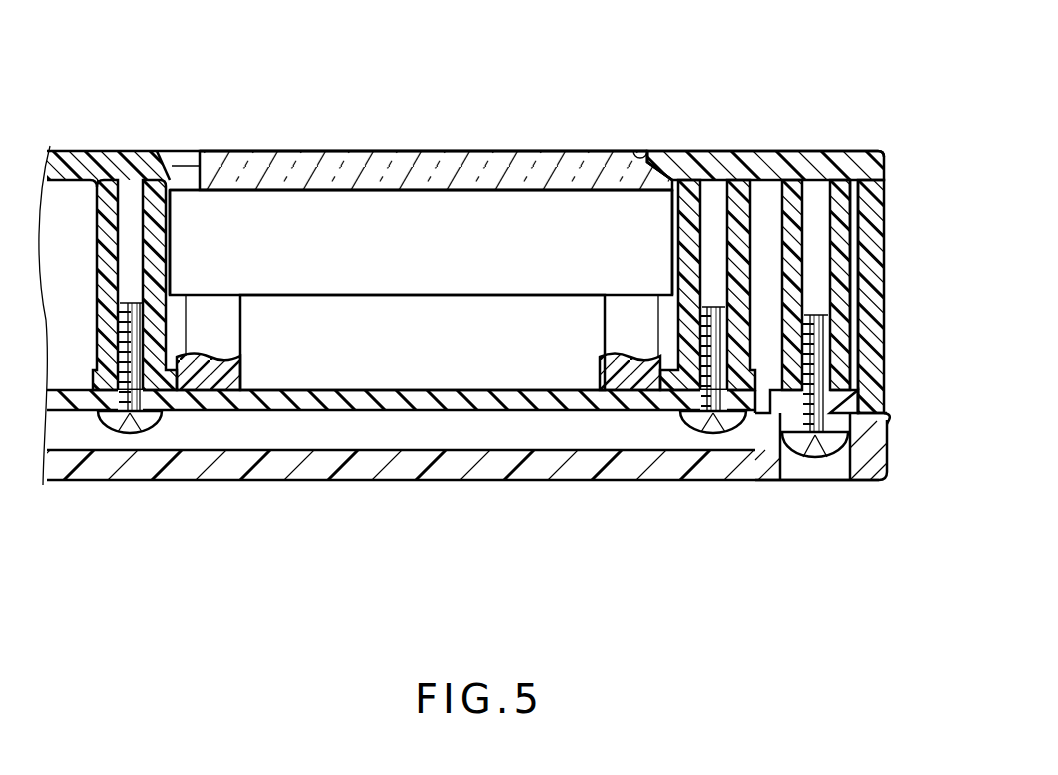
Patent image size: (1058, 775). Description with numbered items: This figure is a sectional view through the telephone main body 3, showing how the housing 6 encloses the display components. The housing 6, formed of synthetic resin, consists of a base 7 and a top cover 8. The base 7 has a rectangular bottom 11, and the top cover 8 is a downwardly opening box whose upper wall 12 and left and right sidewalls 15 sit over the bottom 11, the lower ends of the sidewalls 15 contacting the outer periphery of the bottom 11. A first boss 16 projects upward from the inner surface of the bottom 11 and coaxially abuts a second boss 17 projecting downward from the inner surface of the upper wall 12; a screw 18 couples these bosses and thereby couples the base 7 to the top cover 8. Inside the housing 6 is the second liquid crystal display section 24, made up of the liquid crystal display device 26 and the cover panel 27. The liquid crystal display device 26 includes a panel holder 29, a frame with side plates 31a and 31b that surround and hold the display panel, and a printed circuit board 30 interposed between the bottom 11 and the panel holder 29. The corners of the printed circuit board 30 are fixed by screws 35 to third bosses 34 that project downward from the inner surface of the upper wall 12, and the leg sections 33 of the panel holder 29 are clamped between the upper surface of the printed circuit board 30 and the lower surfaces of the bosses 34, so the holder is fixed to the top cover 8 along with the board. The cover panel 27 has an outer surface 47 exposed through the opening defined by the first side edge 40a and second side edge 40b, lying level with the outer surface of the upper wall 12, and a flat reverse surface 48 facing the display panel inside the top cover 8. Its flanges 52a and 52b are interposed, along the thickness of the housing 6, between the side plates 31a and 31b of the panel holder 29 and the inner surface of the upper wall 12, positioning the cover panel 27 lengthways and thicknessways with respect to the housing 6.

The telephone main body 3 is at (791, 78).
The flange 52b is at (178, 151).
The second side edge 40b is at (198, 162).
The surface 47 is at (300, 178).
The cover panel 27 is at (368, 166).
The liquid crystal display device 26 is at (478, 215).
The second liquid crystal display section 24 is at (596, 170).
The first side edge 40a is at (640, 156).
The flange 52a is at (688, 152).
The upper wall 12 is at (808, 151).
The third boss 34 is at (103, 247).
The side plate 31b is at (172, 266).
The reverse surface 48 is at (311, 194).
The side plate 31a is at (672, 262).
The second boss 17 is at (862, 233).
The sidewall 15 is at (882, 270).
The panel holder 29 is at (392, 270).
The screw 35 is at (129, 425).
The leg section 33 is at (162, 387).
The bottom 11 is at (325, 462).
The printed circuit board 30 is at (420, 400).
The first boss 16 is at (790, 388).
The screw 18 is at (813, 447).
The base 7 is at (849, 472).
The top cover 8 is at (885, 415).
The housing 6 is at (930, 560).